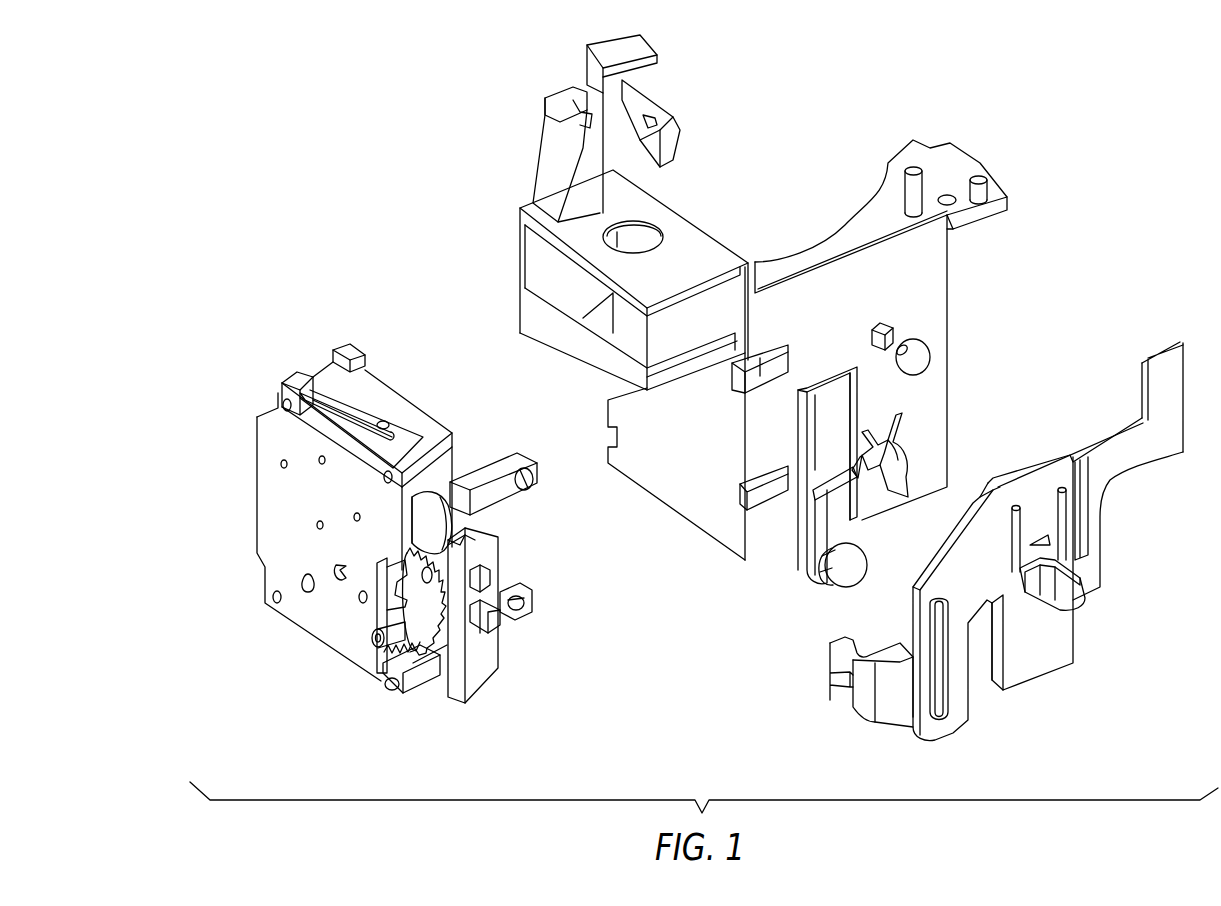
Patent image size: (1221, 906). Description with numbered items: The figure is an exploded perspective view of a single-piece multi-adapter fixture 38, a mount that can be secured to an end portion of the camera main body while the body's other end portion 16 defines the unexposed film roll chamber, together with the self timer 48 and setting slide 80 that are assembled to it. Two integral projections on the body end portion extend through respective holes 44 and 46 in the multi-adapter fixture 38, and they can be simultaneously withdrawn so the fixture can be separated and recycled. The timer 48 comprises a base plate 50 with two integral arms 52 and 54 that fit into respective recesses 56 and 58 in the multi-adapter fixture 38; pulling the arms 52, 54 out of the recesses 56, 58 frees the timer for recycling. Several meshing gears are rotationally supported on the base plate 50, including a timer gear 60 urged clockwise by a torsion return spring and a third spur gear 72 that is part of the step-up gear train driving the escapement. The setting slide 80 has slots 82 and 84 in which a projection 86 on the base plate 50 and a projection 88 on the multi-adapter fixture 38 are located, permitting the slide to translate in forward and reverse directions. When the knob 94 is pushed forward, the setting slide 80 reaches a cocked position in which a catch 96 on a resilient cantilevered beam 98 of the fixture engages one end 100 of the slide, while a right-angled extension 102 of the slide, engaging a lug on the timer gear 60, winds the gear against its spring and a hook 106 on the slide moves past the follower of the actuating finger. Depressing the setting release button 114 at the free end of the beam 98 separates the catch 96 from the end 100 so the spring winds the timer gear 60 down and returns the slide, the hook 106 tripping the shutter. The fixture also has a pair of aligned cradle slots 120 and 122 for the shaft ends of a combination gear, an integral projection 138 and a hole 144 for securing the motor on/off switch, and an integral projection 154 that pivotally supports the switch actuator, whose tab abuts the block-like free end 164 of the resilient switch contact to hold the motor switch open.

The end portion 16 is at (540, 262).
The multi-adapter fixture 38 is at (762, 232).
The hole 44 is at (935, 358).
The hole 46 is at (897, 458).
The timer 48 is at (325, 653).
The base plate 50 is at (410, 401).
The arm 52 is at (522, 496).
The arm 54 is at (521, 588).
The recess 56 is at (740, 378).
The recess 58 is at (750, 506).
The timer gear 60 is at (425, 652).
The third spur gear 72 is at (420, 525).
The setting slide 80 is at (1047, 673).
The slot 82 is at (942, 720).
The slot 84 is at (1082, 533).
The projection 86 is at (492, 613).
The projection 88 is at (881, 323).
The knob 94 is at (1086, 601).
The catch 96 is at (827, 490).
The resilient cantilevered beam 98 is at (830, 388).
The end 100 is at (1030, 686).
The right-angled extension 102 is at (895, 721).
The hook 106 is at (1143, 369).
The setting release button 114 is at (842, 578).
The cradle slot 120 is at (597, 121).
The cradle slot 122 is at (657, 117).
The integral projection 138 is at (980, 176).
The hole 144 is at (957, 205).
The integral projection 154 is at (905, 187).
The block-like free end 164 is at (393, 643).